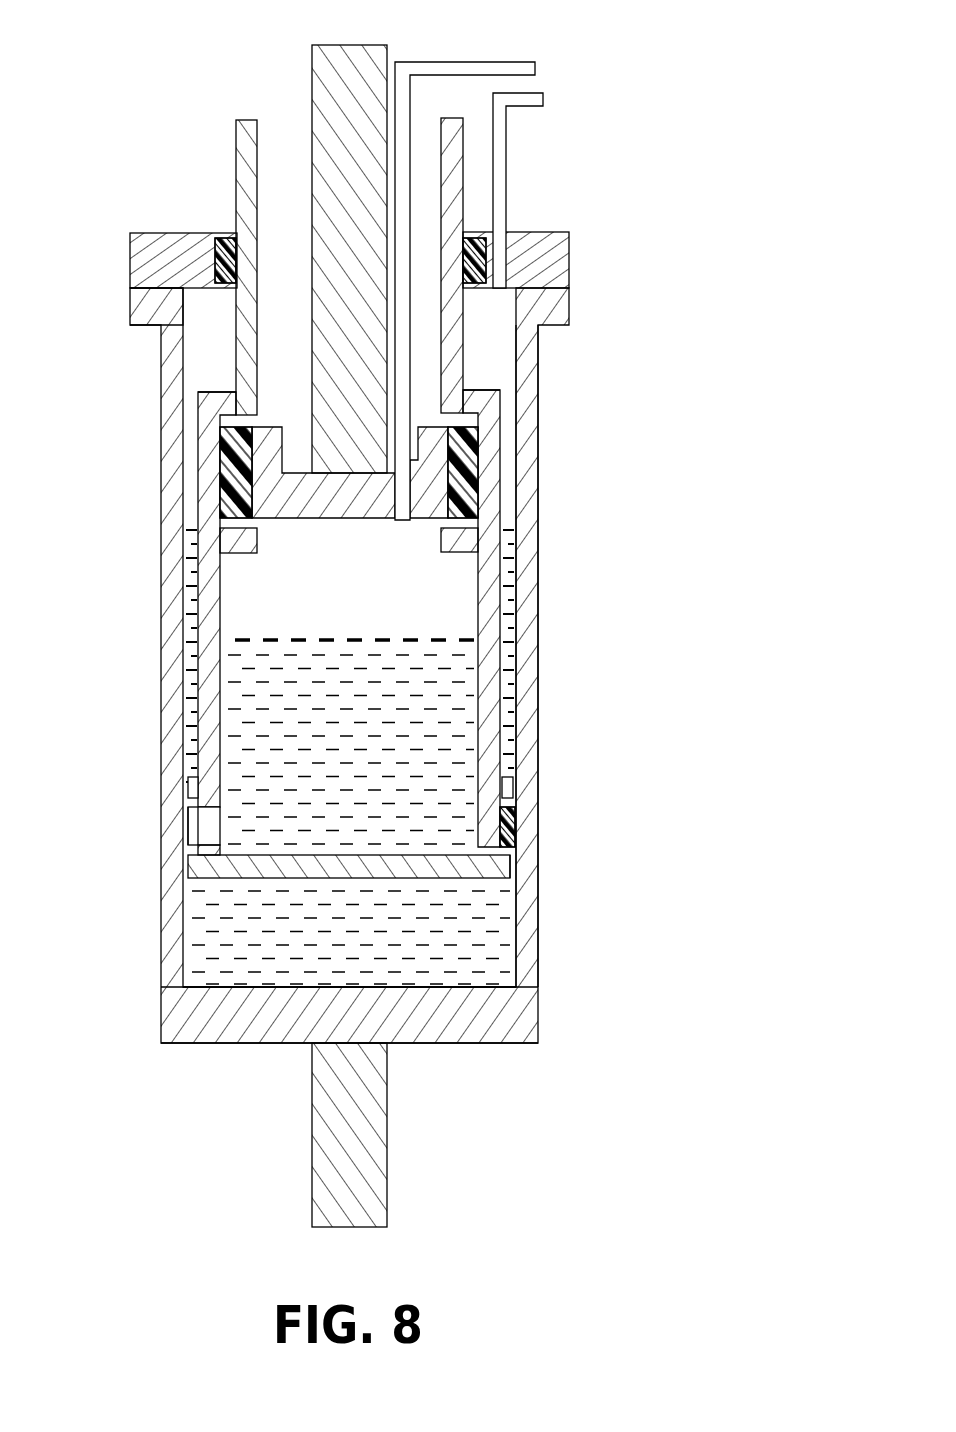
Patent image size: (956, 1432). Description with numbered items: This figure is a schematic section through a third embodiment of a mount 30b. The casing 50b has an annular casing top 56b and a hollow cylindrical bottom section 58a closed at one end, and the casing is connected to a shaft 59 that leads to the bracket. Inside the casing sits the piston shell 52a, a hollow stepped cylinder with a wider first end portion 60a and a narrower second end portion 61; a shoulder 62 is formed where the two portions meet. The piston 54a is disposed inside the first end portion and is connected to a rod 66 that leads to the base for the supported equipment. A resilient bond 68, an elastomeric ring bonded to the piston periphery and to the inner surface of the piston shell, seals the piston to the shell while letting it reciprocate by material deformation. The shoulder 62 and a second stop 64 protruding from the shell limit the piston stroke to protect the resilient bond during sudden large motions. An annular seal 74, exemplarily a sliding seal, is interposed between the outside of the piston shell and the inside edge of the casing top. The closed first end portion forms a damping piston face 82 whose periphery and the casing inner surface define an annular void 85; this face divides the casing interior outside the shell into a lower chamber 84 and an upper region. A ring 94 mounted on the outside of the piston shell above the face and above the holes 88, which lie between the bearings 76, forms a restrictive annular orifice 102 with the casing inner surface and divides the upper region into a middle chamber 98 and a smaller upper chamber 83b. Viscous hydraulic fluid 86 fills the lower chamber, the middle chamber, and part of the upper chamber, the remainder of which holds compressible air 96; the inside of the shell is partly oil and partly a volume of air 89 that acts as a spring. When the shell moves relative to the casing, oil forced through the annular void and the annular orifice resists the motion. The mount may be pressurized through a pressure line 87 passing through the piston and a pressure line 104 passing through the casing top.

The mount 30b is at (617, 204).
The casing 50b is at (161, 442).
The piston shell 52a is at (504, 702).
The piston 54a is at (303, 494).
The casing top 56b is at (547, 274).
The bottom section 58a is at (520, 957).
The shaft 59 is at (367, 1097).
The first end portion 60a is at (255, 745).
The second end portion 61 is at (247, 178).
The shoulder 62 is at (465, 406).
The stop 64 is at (467, 533).
The rod 66 is at (372, 57).
The resilient bond 68 is at (467, 497).
The annular seal 74 is at (224, 245).
The bearings 76 is at (515, 825).
The damping piston face 82 is at (292, 870).
The upper chamber 83b is at (205, 367).
The lower chamber 84 is at (212, 928).
The annular void 85 is at (512, 870).
The hydraulic fluid 86 is at (290, 683).
The pressure line 87 is at (495, 65).
The holes 88 is at (203, 828).
The volume of air 89 is at (330, 598).
The ring 94 is at (505, 790).
The air 96 is at (215, 318).
The middle chamber 98 is at (192, 838).
The annular orifice 102 is at (185, 787).
The pressure line 104 is at (523, 99).